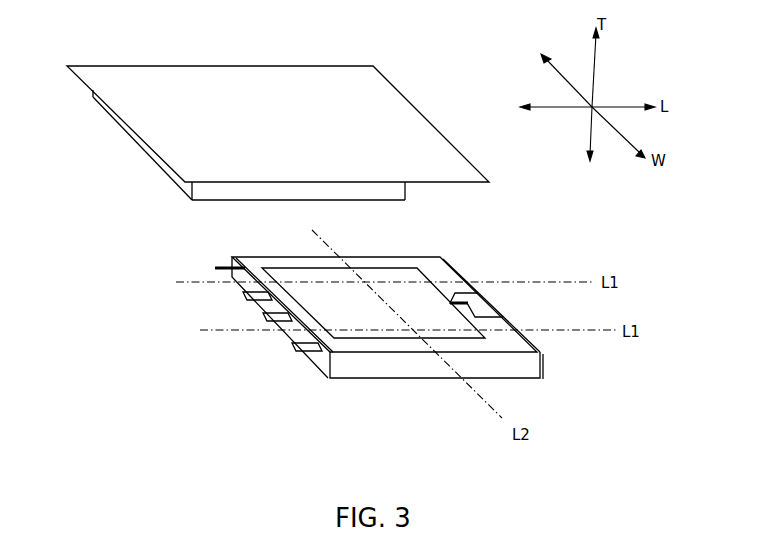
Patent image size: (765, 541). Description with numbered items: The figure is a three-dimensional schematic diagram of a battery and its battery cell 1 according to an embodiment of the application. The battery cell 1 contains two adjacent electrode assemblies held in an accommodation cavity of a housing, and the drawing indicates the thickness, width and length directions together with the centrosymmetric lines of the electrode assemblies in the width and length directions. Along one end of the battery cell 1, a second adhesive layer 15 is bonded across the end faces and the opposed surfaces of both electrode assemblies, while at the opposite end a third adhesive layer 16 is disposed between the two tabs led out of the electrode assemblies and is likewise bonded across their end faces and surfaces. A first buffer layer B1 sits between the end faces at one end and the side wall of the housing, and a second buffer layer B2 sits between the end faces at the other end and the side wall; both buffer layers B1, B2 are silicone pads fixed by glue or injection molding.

The battery cell 1 is at (130, 170).
The second buffer layer B2 is at (233, 255).
The first buffer layer B1 is at (540, 351).
The second adhesive layer 15 is at (479, 301).
The third adhesive layer 16 is at (268, 306).